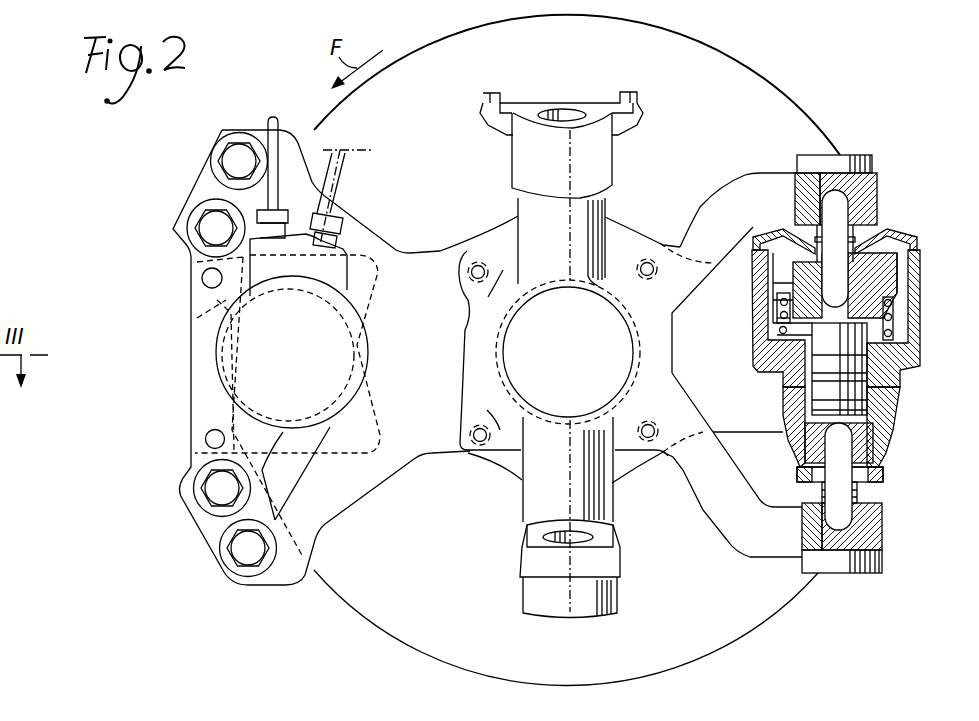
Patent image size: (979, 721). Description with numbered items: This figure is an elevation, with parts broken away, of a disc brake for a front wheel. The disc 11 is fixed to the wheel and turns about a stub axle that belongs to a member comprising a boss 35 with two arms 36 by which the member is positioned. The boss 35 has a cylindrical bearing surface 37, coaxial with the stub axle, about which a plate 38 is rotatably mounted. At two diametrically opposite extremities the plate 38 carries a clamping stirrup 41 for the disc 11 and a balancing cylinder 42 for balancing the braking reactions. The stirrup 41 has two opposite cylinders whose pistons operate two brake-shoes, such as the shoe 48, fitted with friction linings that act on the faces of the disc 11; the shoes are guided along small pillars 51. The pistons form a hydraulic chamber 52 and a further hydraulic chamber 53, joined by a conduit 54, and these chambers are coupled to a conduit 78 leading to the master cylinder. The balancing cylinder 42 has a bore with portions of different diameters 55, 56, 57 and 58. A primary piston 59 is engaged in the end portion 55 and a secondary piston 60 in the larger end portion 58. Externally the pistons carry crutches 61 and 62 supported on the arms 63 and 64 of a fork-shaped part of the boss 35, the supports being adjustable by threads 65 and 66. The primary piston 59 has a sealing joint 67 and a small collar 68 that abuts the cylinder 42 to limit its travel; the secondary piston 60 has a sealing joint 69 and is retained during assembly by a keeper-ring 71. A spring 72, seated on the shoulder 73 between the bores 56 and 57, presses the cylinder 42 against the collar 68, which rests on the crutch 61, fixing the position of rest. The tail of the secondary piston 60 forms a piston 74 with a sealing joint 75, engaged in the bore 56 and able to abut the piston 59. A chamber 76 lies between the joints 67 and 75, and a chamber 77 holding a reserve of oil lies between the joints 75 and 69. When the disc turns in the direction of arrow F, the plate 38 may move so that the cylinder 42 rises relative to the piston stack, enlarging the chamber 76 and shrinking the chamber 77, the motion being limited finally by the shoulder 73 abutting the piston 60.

The disc 11 is at (712, 68).
The boss 35 is at (465, 373).
The arms 36 is at (606, 163).
The cylindrical bearing surface 37 is at (622, 311).
The plate 38 is at (422, 461).
The clamping stirrup 41 is at (193, 525).
The balancing cylinder 42 is at (844, 364).
The brake-shoe 48 is at (216, 304).
The small pillars 51 is at (201, 278).
The hydraulic chamber 52 is at (355, 319).
The hydraulic chamber 53 is at (368, 350).
The conduit 54 is at (277, 117).
The end portion of bore 55 is at (790, 450).
The bore portion 56 is at (785, 403).
The bore portion 57 is at (785, 336).
The end portion of bore 58 is at (778, 308).
The primary piston 59 is at (868, 460).
The secondary piston 60 is at (898, 300).
The crutch 61 is at (850, 488).
The crutch 62 is at (867, 224).
The arm 63 is at (763, 555).
The arm 64 is at (757, 172).
The thread 65 is at (884, 534).
The thread 66 is at (878, 196).
The sealing joint 67 is at (865, 437).
The small collar 68 is at (858, 483).
The sealing joint 69 is at (921, 289).
The keeper-ring 71 is at (919, 252).
The spring 72 is at (778, 318).
The shoulder 73 is at (903, 343).
The piston 74 is at (870, 386).
The sealing joint 75 is at (805, 377).
The chamber 76 is at (868, 406).
The chamber 77 is at (895, 322).
The conduit 78 is at (350, 199).